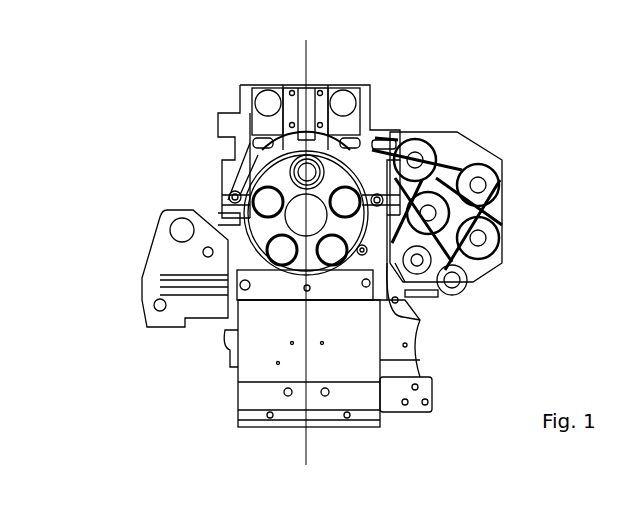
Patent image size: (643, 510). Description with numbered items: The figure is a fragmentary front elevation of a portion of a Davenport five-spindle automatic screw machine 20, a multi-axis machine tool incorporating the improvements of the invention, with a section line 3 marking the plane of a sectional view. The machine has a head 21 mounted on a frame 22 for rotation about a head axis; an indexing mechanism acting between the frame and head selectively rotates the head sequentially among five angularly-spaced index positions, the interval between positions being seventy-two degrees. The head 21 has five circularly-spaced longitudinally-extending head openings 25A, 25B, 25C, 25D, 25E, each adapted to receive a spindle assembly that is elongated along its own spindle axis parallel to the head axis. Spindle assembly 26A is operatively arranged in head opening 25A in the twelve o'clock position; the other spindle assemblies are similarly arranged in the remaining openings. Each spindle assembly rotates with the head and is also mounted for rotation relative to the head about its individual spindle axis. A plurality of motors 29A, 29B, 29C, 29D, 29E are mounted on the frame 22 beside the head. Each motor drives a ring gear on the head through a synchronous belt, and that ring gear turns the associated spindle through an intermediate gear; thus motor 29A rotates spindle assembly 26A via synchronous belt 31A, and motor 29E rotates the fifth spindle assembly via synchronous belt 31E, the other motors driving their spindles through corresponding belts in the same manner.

The five-spindle automatic screw machine 20 is at (196, 71).
The section line 3- 3 is at (306, 40).
The head 21 is at (297, 284).
The frame 22 is at (424, 350).
The head opening 25A is at (296, 168).
The head opening 25B is at (230, 196).
The head opening 25C is at (236, 276).
The head opening 25D is at (332, 253).
The head opening 25E is at (382, 358).
The spindle assembly 26A is at (286, 149).
The motor 29A is at (422, 140).
The motor 29B is at (502, 223).
The motor 29C is at (468, 282).
The motor 29D is at (505, 244).
The motor 29E is at (502, 176).
The synchronous belt 31A is at (392, 128).
The synchronous belt 31E is at (467, 158).